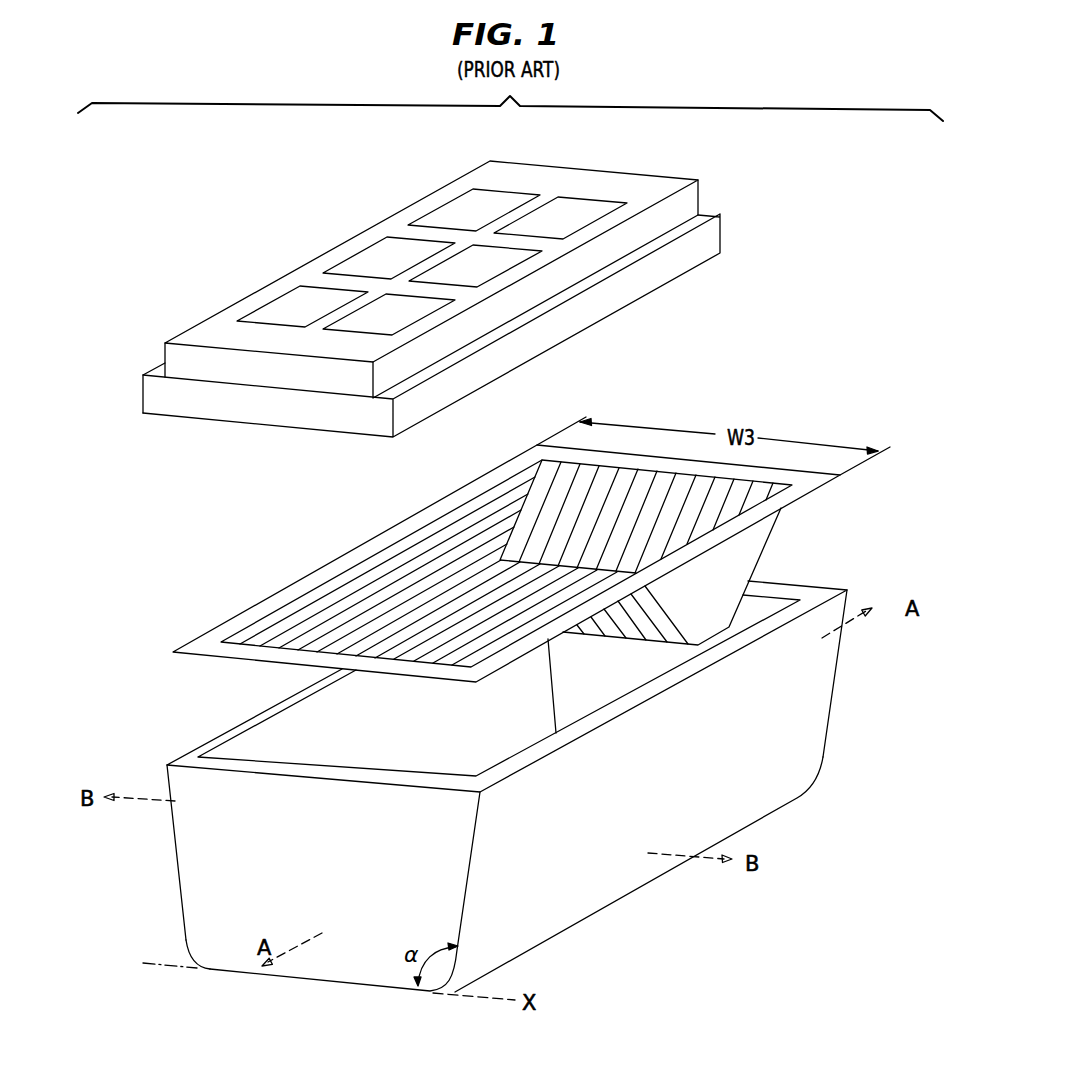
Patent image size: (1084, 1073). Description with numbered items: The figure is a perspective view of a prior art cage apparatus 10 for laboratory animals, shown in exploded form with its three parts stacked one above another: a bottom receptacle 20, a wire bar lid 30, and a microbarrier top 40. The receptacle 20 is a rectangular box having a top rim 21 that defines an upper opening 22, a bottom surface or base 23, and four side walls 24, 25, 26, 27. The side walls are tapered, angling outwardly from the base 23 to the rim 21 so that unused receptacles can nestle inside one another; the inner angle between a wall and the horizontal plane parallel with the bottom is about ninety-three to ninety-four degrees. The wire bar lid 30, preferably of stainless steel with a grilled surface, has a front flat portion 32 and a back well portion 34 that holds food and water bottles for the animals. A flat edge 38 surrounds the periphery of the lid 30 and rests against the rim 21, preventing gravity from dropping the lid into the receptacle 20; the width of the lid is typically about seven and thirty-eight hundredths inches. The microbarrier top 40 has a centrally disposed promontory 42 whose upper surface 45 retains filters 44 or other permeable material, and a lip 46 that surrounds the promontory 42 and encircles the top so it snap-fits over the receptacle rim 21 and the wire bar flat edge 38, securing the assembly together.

The cage apparatus 10 is at (88, 582).
The receptacle 20 is at (803, 693).
The rim 21 is at (193, 755).
The upper opening 22 is at (604, 690).
The base 23 is at (325, 982).
The side wall 24 is at (600, 892).
The side wall 25 is at (197, 897).
The side wall 26 is at (155, 844).
The side wall 27 is at (838, 574).
The wire bar lid 30 is at (818, 478).
The front flat portion 32 is at (340, 605).
The back well portion 34 is at (485, 518).
The flat edge 38 is at (204, 648).
The microbarrier top 40 is at (693, 202).
The promontory 42 is at (200, 337).
The filters 44 is at (458, 208).
The upper surface 45 is at (600, 182).
The lip 46 is at (147, 392).